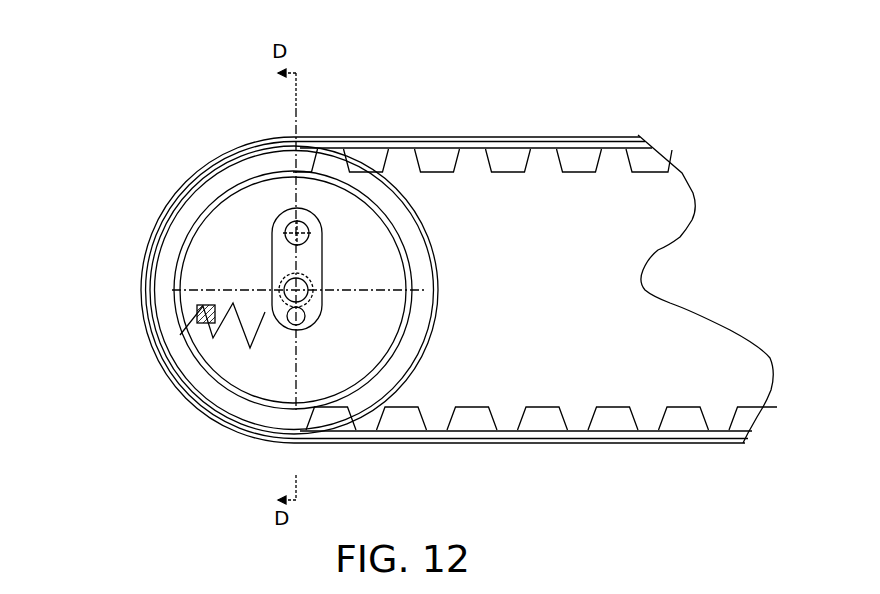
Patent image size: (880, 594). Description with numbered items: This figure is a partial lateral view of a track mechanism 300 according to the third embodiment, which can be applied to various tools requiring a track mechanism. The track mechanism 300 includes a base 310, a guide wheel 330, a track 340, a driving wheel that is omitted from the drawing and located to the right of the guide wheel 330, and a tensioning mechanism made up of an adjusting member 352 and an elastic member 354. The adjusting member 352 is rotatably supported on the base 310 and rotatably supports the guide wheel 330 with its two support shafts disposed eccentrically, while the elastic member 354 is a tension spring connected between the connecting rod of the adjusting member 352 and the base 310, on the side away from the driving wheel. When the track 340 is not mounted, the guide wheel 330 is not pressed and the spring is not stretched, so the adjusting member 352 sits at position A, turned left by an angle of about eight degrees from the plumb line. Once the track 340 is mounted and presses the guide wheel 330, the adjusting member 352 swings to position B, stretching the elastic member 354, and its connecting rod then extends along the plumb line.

The track mechanism 300 is at (410, 26).
The base 310 is at (172, 341).
The guide wheel 330 is at (233, 170).
The track 340 is at (578, 148).
The adjusting member 352 is at (276, 222).
The elastic member 354 is at (279, 300).
The position A is at (283, 290).
The position B is at (270, 276).